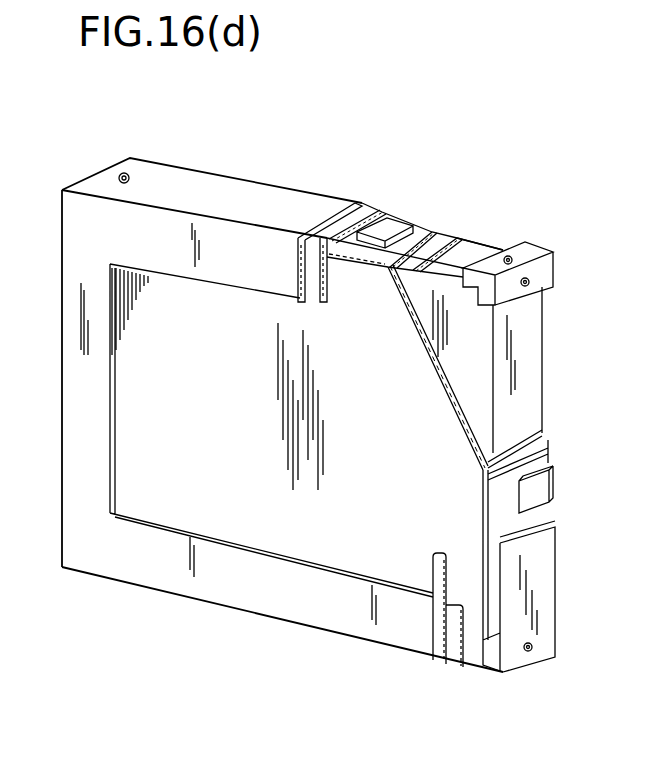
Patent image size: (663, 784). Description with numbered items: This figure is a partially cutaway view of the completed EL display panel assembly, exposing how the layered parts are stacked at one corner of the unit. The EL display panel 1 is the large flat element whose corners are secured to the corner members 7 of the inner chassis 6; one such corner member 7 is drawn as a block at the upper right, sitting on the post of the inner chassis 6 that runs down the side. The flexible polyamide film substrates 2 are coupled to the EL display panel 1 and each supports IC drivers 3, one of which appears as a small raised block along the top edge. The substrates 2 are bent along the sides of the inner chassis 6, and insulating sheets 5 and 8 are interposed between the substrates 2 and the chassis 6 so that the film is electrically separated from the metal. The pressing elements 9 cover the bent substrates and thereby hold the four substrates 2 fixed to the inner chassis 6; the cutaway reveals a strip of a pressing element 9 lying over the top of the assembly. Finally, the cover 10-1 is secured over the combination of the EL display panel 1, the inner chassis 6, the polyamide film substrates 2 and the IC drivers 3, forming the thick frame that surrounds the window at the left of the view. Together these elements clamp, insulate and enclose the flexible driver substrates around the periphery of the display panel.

The cover 10-1 is at (247, 377).
The pressing element 9 is at (367, 208).
The insulating sheet 8 is at (387, 218).
The IC driver 3 is at (405, 232).
The polyamide film substrate 2 is at (440, 230).
The insulating sheet 5 is at (455, 236).
The corner member 7 is at (548, 270).
The inner chassis 6 is at (530, 334).
The EL display panel 1 is at (428, 415).